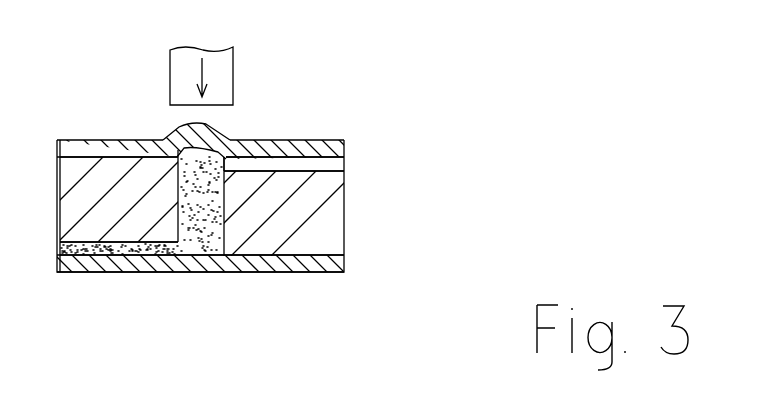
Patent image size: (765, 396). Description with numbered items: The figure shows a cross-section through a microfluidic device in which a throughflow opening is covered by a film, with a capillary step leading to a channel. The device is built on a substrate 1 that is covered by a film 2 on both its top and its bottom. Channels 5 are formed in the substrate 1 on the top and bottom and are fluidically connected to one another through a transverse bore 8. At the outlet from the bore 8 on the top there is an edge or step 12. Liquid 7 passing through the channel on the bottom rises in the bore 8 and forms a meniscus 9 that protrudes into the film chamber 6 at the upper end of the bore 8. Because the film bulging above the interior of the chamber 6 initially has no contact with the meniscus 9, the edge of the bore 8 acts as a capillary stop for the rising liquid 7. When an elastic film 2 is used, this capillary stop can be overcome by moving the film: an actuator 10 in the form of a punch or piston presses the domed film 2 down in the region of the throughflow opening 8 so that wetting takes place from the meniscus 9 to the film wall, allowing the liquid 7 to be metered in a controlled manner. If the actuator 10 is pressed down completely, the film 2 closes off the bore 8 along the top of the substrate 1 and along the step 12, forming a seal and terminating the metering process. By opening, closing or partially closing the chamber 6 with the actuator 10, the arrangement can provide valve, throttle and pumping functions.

The substrate 1 is at (330, 217).
The film 2 is at (335, 138).
The channel 5 is at (332, 163).
The chamber 6 is at (172, 135).
The liquid 7 is at (148, 250).
The bore/throughflow opening 8 is at (212, 245).
The meniscus 9 is at (226, 160).
The actuator 10 is at (222, 72).
The step/edge 12 is at (272, 138).